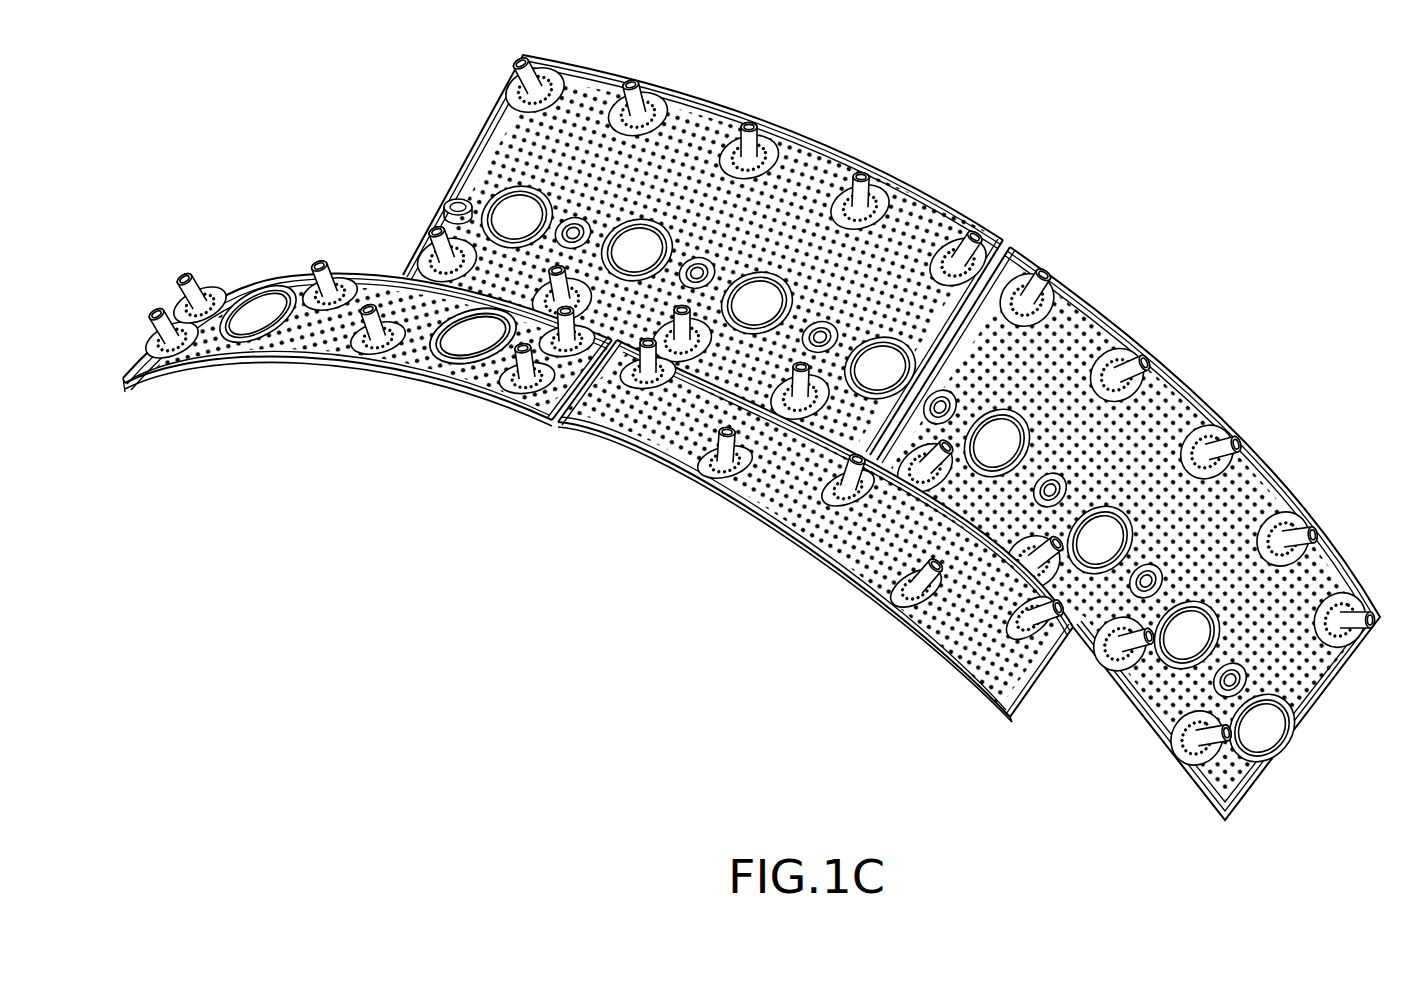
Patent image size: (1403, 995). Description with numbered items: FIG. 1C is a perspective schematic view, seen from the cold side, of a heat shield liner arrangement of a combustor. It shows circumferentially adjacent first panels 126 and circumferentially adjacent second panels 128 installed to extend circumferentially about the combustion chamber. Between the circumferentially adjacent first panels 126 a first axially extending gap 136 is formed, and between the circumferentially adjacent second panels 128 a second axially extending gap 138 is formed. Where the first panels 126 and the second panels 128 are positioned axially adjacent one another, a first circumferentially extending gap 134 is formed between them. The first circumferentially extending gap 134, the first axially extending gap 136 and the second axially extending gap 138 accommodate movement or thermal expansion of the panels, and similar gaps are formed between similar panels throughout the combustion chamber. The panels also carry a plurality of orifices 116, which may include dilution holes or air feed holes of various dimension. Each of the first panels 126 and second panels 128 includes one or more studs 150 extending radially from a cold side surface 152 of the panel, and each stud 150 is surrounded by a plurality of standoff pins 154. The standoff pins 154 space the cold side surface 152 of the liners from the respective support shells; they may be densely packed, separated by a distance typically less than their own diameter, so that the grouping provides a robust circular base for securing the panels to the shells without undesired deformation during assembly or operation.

The orifices 116 is at (1187, 638).
The first panels 126 is at (608, 475).
The second panels 128 is at (891, 422).
The first circumferentially extending gap 134 is at (397, 276).
The first axially extending gap 136 is at (552, 422).
The second axially extending gap 138 is at (1012, 245).
The studs 150 is at (940, 570).
The cold side surface 152 is at (998, 655).
The standoff pins 154 is at (900, 600).